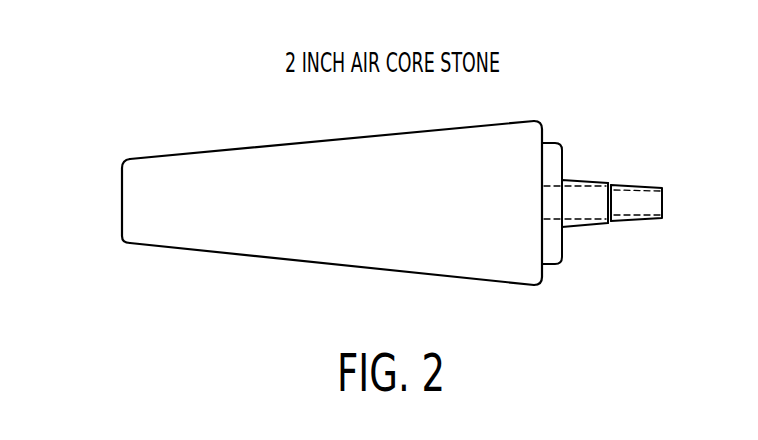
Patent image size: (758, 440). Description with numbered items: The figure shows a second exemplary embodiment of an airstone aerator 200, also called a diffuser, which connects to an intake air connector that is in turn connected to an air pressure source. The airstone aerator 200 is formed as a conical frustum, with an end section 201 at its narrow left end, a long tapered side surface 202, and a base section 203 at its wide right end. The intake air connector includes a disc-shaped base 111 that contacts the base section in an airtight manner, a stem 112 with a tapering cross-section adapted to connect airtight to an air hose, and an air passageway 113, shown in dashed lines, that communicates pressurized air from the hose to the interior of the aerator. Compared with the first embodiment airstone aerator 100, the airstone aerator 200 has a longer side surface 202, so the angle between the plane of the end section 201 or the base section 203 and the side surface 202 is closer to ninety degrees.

The airstone aerator 100 is at (636, 223).
The base 111 is at (563, 158).
The stem 112 is at (643, 183).
The air passageway 113 is at (663, 200).
The airstone aerator 200 is at (331, 212).
The end section 201 is at (122, 193).
The side surface 202 is at (273, 146).
The base section 203 is at (542, 272).